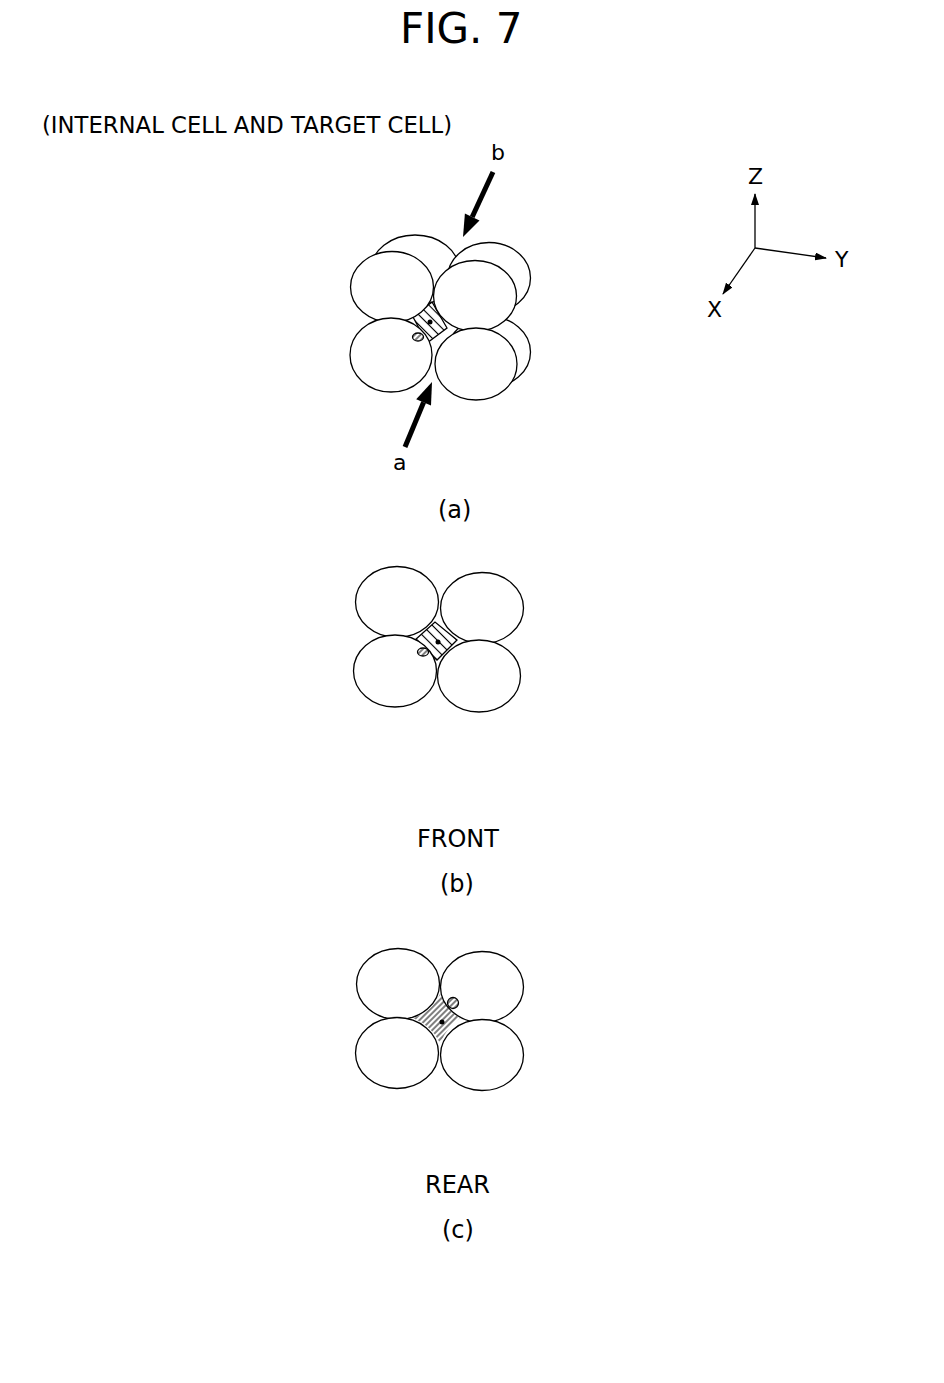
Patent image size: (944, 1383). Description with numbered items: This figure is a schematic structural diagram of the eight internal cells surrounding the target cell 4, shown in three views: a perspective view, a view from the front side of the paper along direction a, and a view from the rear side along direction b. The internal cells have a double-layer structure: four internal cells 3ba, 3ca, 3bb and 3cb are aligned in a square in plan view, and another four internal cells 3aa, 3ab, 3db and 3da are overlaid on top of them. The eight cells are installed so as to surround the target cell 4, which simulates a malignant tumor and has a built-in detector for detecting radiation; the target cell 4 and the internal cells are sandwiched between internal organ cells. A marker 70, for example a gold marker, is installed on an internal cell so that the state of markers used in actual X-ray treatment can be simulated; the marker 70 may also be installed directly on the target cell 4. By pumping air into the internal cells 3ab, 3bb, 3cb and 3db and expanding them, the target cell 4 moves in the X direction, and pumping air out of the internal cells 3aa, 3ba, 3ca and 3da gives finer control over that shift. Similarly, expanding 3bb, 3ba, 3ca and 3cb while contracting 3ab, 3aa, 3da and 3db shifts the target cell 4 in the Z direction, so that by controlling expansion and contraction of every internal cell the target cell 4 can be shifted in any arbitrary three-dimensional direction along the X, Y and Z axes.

The internal cell 3aa is at (493, 283).
The internal cell 3ab is at (493, 250).
The internal cell 3ba is at (488, 377).
The internal cell 3bb is at (517, 342).
The internal cell 3ca is at (365, 360).
The internal cell 3cb is at (510, 1055).
The internal cell 3da is at (363, 285).
The internal cell 3db is at (405, 238).
The target cell 4 is at (443, 343).
The marker 70 is at (418, 343).